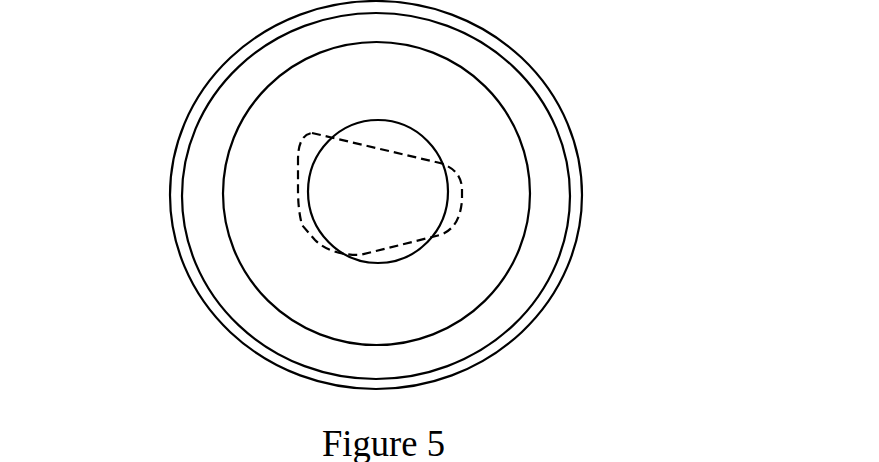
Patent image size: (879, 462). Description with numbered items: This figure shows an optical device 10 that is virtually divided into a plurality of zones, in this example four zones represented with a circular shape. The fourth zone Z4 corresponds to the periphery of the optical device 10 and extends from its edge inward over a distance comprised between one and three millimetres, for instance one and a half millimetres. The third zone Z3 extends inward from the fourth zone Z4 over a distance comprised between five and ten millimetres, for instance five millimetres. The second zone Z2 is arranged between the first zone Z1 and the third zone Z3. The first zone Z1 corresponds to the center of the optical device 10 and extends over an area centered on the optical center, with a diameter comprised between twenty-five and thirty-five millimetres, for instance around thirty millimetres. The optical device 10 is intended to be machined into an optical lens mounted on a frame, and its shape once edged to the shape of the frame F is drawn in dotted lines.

The optical device 10 is at (157, 112).
The fourth zone Z4 is at (528, 70).
The third zone Z3 is at (542, 140).
The second zone Z2 is at (465, 196).
The first zone Z1 is at (427, 207).
The frame F is at (300, 193).